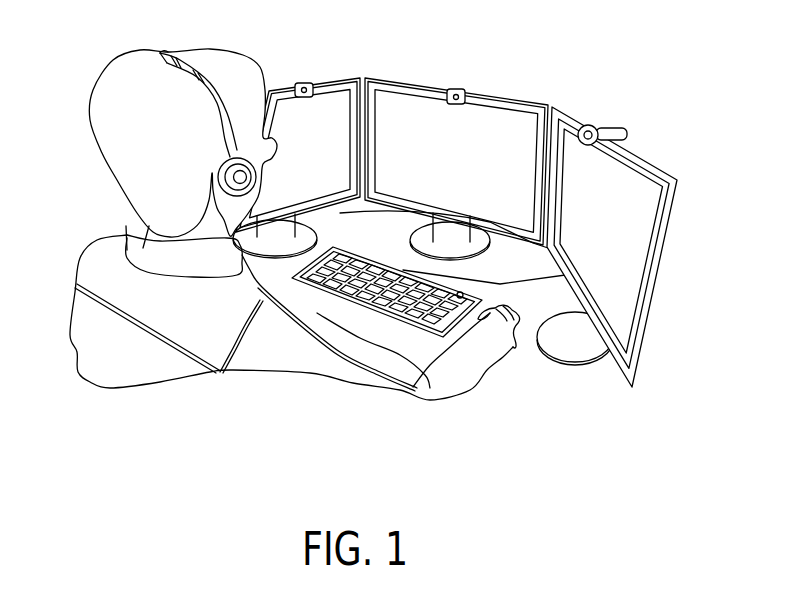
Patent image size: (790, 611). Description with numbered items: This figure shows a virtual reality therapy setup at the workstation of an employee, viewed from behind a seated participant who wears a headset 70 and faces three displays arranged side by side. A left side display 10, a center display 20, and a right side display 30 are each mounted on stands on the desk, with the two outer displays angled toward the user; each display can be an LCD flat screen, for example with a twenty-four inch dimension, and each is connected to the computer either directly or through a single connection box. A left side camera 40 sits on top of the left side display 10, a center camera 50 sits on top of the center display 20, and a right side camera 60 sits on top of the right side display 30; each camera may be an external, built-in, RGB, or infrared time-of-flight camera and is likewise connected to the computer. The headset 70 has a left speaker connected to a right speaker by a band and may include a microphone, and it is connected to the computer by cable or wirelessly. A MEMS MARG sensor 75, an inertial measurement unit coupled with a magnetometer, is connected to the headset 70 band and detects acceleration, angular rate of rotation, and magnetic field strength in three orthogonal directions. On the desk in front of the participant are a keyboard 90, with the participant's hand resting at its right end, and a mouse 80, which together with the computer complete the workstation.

The left side display 10 is at (338, 95).
The center display 20 is at (505, 113).
The right side display 30 is at (643, 200).
The left side camera 40 is at (302, 81).
The center camera 50 is at (460, 87).
The right side camera 60 is at (592, 126).
The headset 70 is at (208, 95).
The MEMS MARG sensor 75 is at (162, 54).
The mouse 80 is at (513, 345).
The keyboard 90 is at (385, 313).